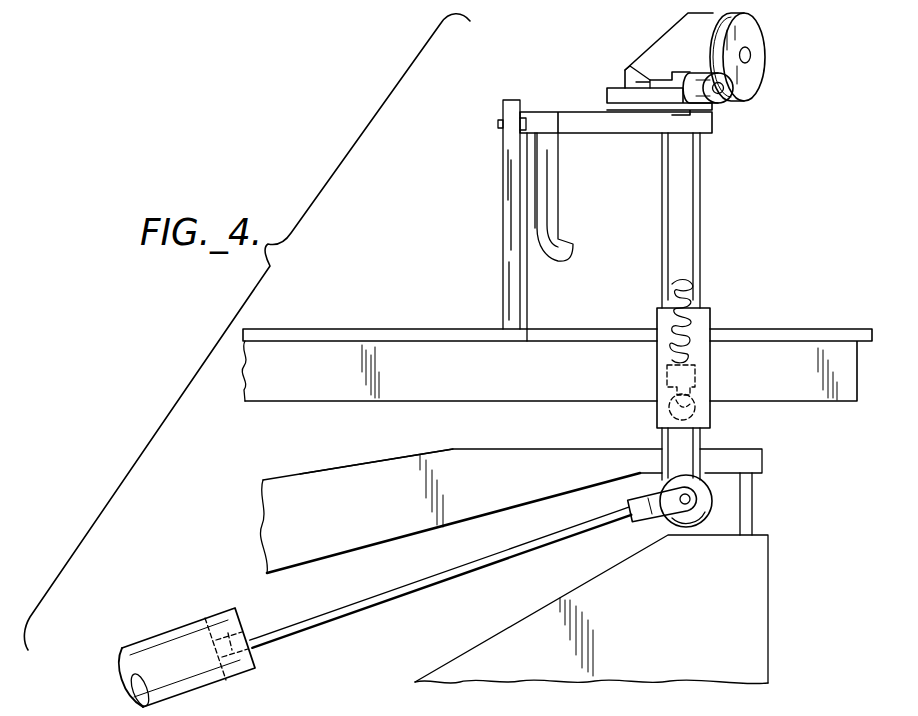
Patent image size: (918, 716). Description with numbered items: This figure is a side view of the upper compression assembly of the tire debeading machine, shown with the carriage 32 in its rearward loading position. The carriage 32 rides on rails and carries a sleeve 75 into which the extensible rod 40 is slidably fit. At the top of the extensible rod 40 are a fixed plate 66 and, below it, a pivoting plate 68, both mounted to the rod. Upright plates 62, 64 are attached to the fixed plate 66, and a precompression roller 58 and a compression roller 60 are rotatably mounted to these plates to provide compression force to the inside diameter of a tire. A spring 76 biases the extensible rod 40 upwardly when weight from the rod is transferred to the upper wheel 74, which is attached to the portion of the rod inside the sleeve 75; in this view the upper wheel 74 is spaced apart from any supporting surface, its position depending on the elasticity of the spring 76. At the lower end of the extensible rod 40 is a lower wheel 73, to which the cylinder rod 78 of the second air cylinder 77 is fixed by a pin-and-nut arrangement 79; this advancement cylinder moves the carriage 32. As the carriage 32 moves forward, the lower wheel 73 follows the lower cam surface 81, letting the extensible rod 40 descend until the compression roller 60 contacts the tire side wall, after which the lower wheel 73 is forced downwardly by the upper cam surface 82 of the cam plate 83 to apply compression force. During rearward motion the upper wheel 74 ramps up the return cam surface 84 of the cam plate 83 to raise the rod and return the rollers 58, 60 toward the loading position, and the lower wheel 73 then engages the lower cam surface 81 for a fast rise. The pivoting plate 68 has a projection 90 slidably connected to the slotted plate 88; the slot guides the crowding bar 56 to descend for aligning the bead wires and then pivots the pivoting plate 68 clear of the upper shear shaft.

The carriage 32 is at (348, 390).
The extensible rod 40 is at (692, 230).
The crowding bar 56 is at (565, 238).
The precompression roller 58 is at (760, 43).
The compression roller 60 is at (723, 99).
The upright plate 62 is at (660, 47).
The upright plate 64 is at (648, 80).
The fixed plate 66 is at (610, 97).
The pivoting plate 68 is at (628, 133).
The lower wheel 73 is at (745, 503).
The upper wheel 74 is at (695, 413).
The sleeve 75 is at (700, 350).
The spring 76 is at (683, 350).
The second air cylinder 77 is at (205, 685).
The cylinder rod 78 is at (430, 582).
The pin-and-nut arrangement 79 is at (687, 505).
The lower cam surface 81 is at (507, 628).
The upper cam surface 82 is at (383, 545).
The cam plate 83 is at (377, 521).
The return cam surface 84 is at (350, 468).
The slotted plate 88 is at (515, 288).
The projection 90 is at (498, 124).